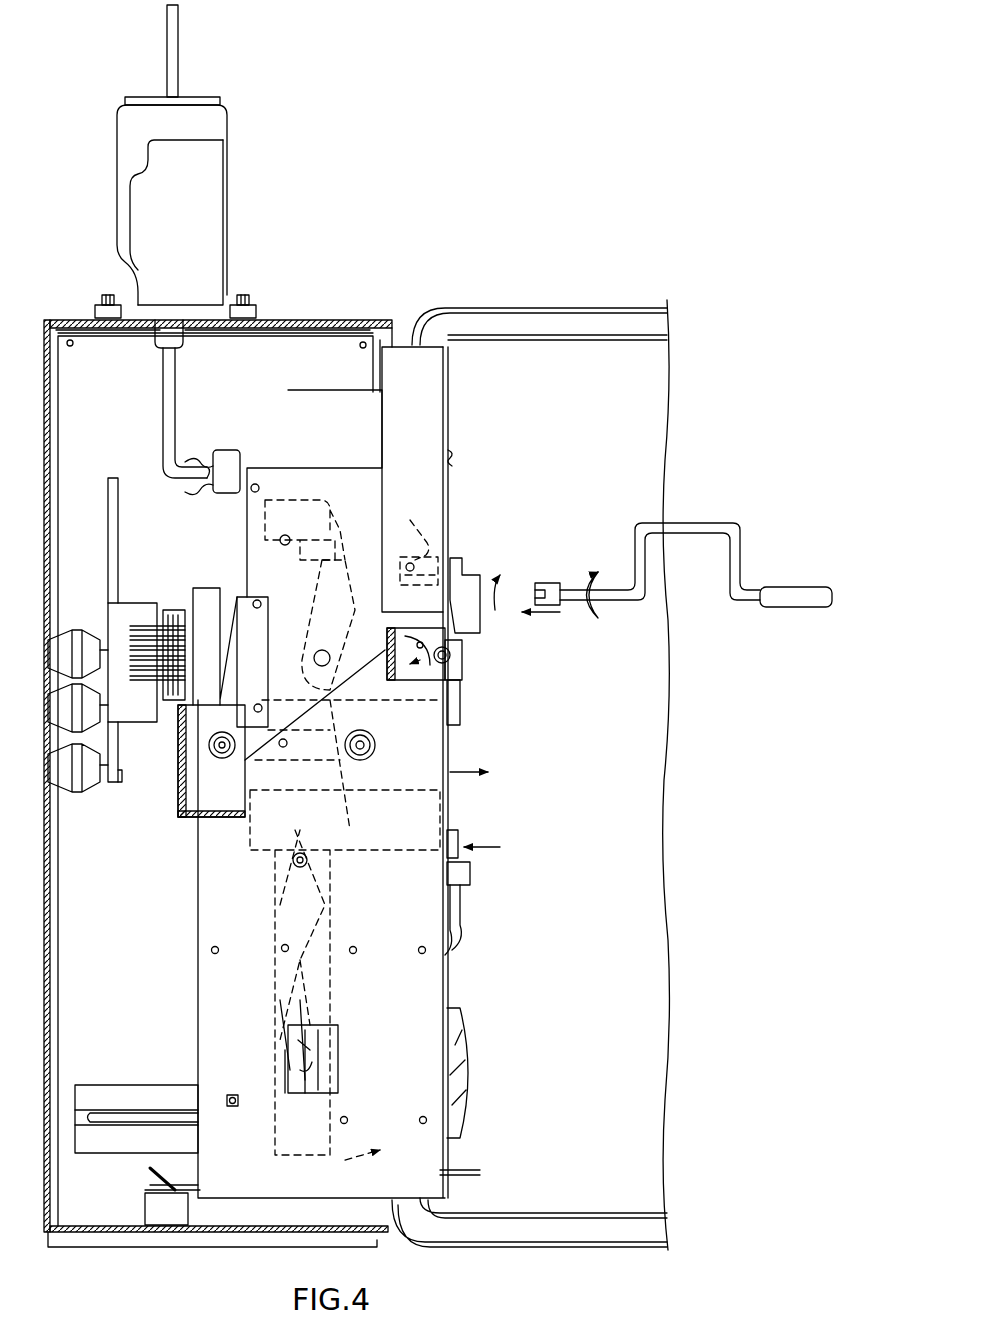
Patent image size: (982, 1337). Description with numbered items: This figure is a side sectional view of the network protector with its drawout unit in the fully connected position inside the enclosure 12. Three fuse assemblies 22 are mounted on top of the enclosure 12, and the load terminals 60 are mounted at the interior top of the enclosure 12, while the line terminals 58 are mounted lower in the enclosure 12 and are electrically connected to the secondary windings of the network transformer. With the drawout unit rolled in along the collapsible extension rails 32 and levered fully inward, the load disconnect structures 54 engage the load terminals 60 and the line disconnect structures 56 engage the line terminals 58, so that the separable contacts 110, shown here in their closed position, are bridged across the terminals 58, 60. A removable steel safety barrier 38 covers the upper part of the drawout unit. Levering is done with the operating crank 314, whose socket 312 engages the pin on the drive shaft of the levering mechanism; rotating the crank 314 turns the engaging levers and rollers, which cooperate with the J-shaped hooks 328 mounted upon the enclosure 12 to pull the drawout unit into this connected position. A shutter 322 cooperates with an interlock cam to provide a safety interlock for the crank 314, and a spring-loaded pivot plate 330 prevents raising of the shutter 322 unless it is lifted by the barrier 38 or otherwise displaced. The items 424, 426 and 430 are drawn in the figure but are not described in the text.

The enclosure 12 is at (52, 320).
The fuse assemblies 22 is at (222, 220).
The load terminals 60 is at (163, 430).
The load disconnect structures 54 is at (202, 460).
The line terminals 58 is at (130, 612).
The line disconnect structures 56 is at (175, 610).
The collapsible extension rails 32 is at (272, 1000).
The safety barrier 38 is at (449, 393).
The spring-loaded pivot plate 330 is at (437, 525).
The separable contacts 110 is at (338, 546).
The shutter 322 is at (462, 578).
The J-shaped hooks 328 is at (465, 664).
The stop 430 is at (241, 1082).
The slide bracket 424 is at (128, 1145).
The holes 426 is at (419, 1120).
The socket 312 is at (552, 575).
The operating crank 314 is at (624, 600).